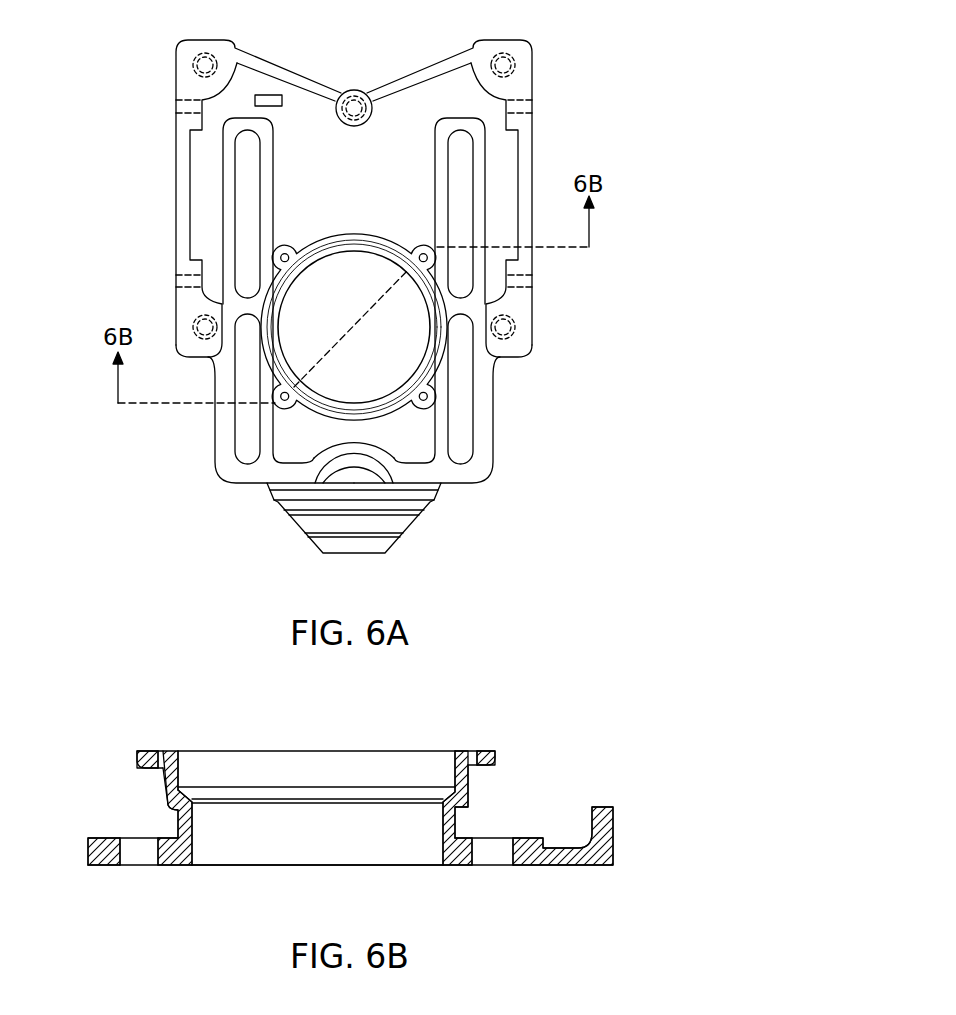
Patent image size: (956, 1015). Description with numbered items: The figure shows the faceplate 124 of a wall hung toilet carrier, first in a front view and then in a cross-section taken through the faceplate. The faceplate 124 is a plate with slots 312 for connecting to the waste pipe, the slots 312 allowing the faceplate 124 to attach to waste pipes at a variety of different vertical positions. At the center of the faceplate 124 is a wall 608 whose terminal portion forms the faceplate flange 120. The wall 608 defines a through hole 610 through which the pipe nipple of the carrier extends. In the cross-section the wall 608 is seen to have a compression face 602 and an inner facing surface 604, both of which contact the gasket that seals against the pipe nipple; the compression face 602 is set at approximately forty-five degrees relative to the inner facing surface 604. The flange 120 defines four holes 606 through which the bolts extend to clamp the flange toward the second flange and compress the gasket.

In FIG. 6A, the faceplate 124 is at (532, 137).
In FIG. 6B, the faceplate 124 is at (107, 865).
In FIG. 6A, the faceplate flange 120 is at (310, 236).
In FIG. 6B, the faceplate flange 120 is at (155, 751).
In FIG. 6B, the slots 312 is at (138, 838).
In FIG. 6B, the compression face 602 is at (190, 796).
In FIG. 6B, the inner facing surface 604 is at (180, 760).
In FIG. 6B, the holes 606 is at (150, 751).
In FIG. 6B, the wall 608 is at (458, 820).
In FIG. 6B, the through hole 610 is at (381, 855).